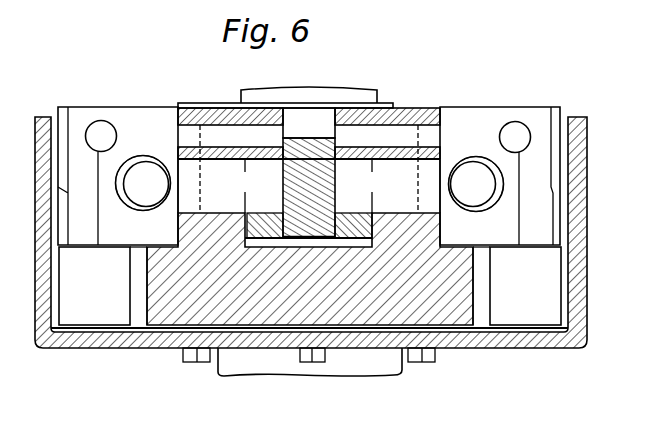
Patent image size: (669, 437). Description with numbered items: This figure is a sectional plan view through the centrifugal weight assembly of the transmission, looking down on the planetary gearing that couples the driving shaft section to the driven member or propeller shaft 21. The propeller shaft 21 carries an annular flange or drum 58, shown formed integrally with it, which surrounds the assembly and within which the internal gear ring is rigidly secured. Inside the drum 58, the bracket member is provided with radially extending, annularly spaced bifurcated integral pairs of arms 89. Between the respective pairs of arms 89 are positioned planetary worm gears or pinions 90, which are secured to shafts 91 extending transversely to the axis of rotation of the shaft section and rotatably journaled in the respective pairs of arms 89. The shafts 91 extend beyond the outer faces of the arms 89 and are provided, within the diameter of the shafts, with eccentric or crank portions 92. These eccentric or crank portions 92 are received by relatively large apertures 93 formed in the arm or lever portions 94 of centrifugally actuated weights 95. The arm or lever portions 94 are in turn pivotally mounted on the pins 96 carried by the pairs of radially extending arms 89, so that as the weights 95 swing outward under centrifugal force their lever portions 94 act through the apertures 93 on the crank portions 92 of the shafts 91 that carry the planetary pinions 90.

The propeller shaft 21 is at (344, 90).
The annular flange or drum 58 is at (587, 318).
The bifurcated pairs of arms 89 is at (345, 111).
The planetary worm gears or pinions 90 is at (307, 157).
The shafts 91 is at (262, 180).
The eccentric or crank portions 92 is at (190, 174).
The apertures 93 is at (138, 210).
The arm or lever portions 94 is at (178, 118).
The centrifugally actuated weights 95 is at (103, 310).
The pins 96 is at (101, 130).